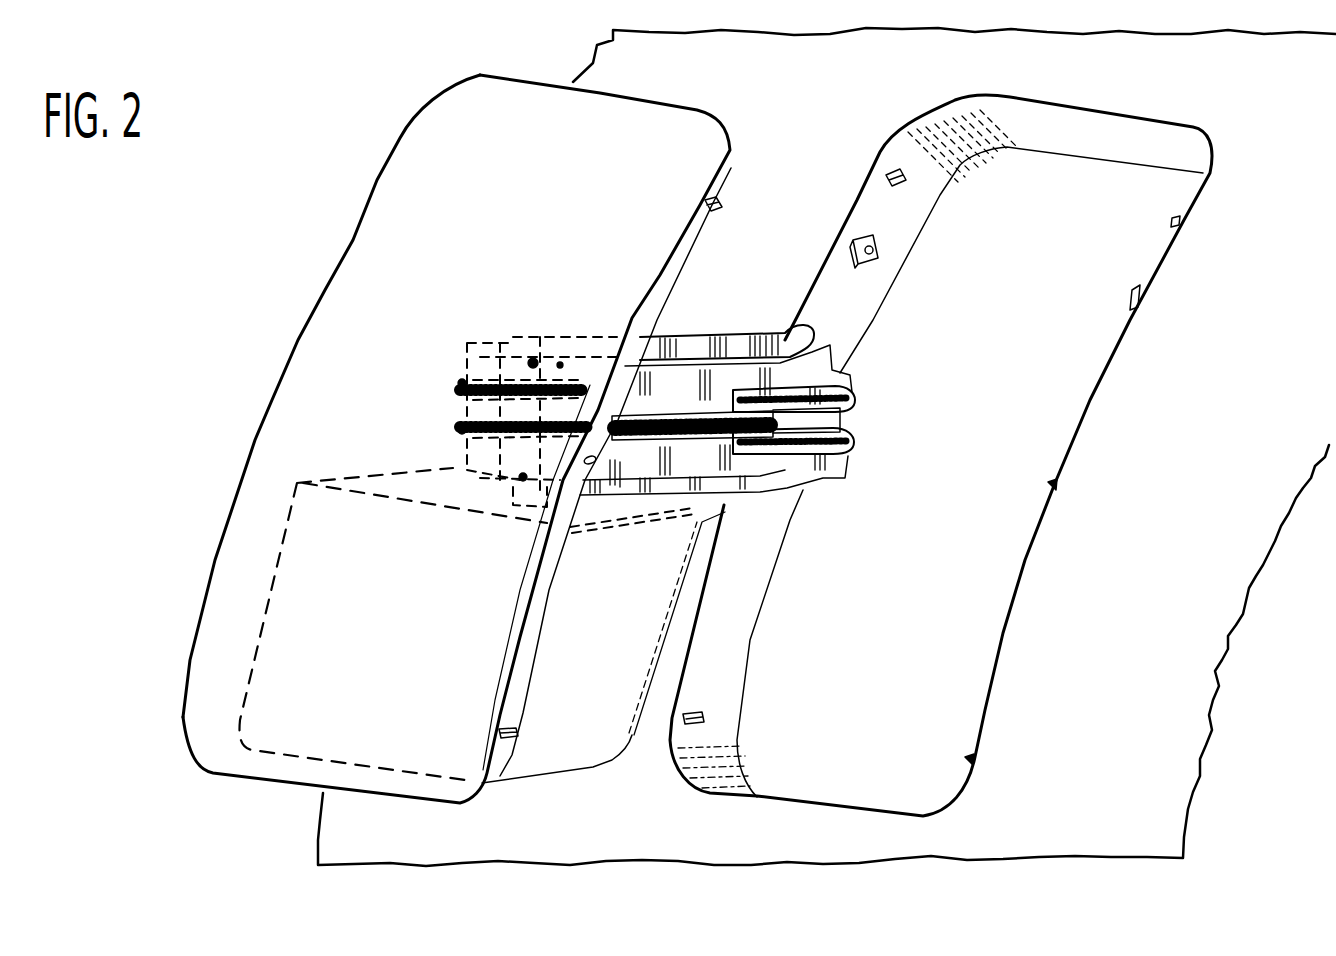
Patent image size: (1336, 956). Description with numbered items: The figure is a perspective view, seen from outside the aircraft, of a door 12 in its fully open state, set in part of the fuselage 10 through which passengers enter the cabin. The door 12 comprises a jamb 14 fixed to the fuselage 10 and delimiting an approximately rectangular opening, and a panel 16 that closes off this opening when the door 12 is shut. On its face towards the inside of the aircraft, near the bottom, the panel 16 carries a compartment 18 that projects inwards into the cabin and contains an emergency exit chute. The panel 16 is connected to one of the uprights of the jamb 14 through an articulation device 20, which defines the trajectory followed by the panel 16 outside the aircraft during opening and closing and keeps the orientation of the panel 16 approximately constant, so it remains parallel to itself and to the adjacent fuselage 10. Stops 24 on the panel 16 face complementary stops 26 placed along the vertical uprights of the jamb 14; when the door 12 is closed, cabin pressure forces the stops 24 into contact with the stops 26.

The fuselage 10 is at (1181, 716).
The door 12 is at (389, 98).
The jamb 14 is at (1140, 135).
The panel 16 is at (273, 398).
The compartment 18 is at (593, 727).
The articulation device 20 is at (838, 475).
The stops 24 is at (722, 210).
The stops 26 is at (898, 176).